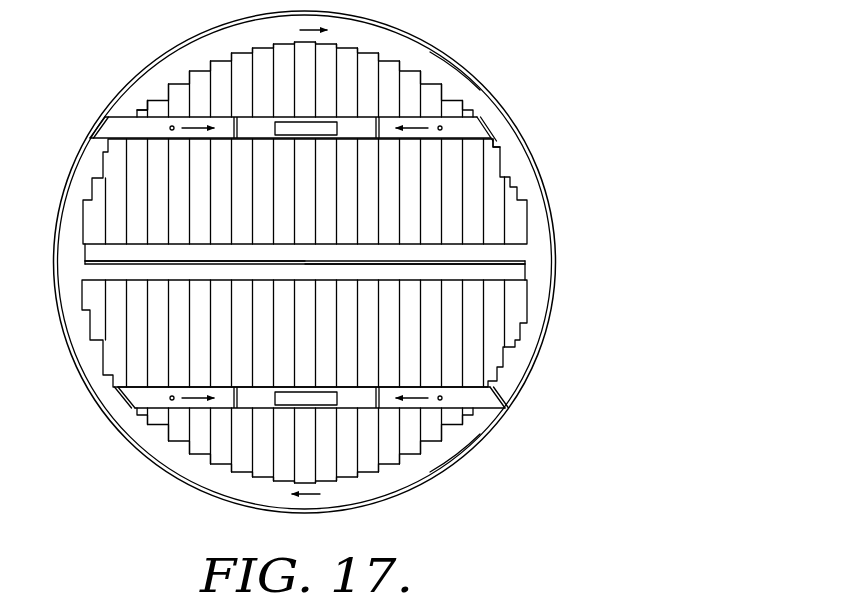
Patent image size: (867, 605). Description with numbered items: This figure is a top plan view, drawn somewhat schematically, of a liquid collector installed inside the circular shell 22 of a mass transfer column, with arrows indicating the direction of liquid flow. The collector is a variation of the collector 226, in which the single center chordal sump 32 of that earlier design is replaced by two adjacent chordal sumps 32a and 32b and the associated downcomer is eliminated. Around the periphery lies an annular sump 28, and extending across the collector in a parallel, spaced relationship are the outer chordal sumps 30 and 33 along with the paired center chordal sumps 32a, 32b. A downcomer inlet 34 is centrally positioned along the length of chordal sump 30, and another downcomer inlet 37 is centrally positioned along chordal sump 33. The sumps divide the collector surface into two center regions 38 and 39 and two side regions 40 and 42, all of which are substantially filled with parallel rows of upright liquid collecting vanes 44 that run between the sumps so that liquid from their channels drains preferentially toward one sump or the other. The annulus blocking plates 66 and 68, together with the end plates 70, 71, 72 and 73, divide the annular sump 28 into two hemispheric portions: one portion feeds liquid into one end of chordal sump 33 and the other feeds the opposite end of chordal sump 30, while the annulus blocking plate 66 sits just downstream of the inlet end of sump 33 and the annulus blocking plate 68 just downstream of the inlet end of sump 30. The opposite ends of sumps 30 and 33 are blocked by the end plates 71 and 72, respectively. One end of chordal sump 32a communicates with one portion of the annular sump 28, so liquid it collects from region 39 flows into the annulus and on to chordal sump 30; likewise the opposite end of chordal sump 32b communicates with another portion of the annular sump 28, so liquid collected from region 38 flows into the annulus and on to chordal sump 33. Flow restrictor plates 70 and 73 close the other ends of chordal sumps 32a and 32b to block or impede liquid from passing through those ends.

The shell 22 is at (182, 53).
The collector 226 is at (133, 107).
The annular sump 28 is at (447, 68).
The chordal sump 30 is at (432, 409).
The chordal sump 32 is at (338, 274).
The chordal sump 32a is at (183, 258).
The chordal sump 32b is at (405, 268).
The chordal sump 33 is at (490, 148).
The downcomer inlet 34 is at (302, 398).
The downcomer inlet 37 is at (304, 128).
The center region 38 is at (486, 346).
The center region 39 is at (524, 227).
The side region 40 is at (259, 52).
The side region 42 is at (240, 456).
The liquid collecting vane 44 is at (382, 50).
The annulus blocking plate 66 is at (107, 119).
The annulus blocking plate 68 is at (500, 412).
The flow restrictor plate 70 is at (78, 262).
The end plate 71 is at (481, 118).
The end plate 72 is at (120, 392).
The flow restrictor plate 73 is at (520, 272).